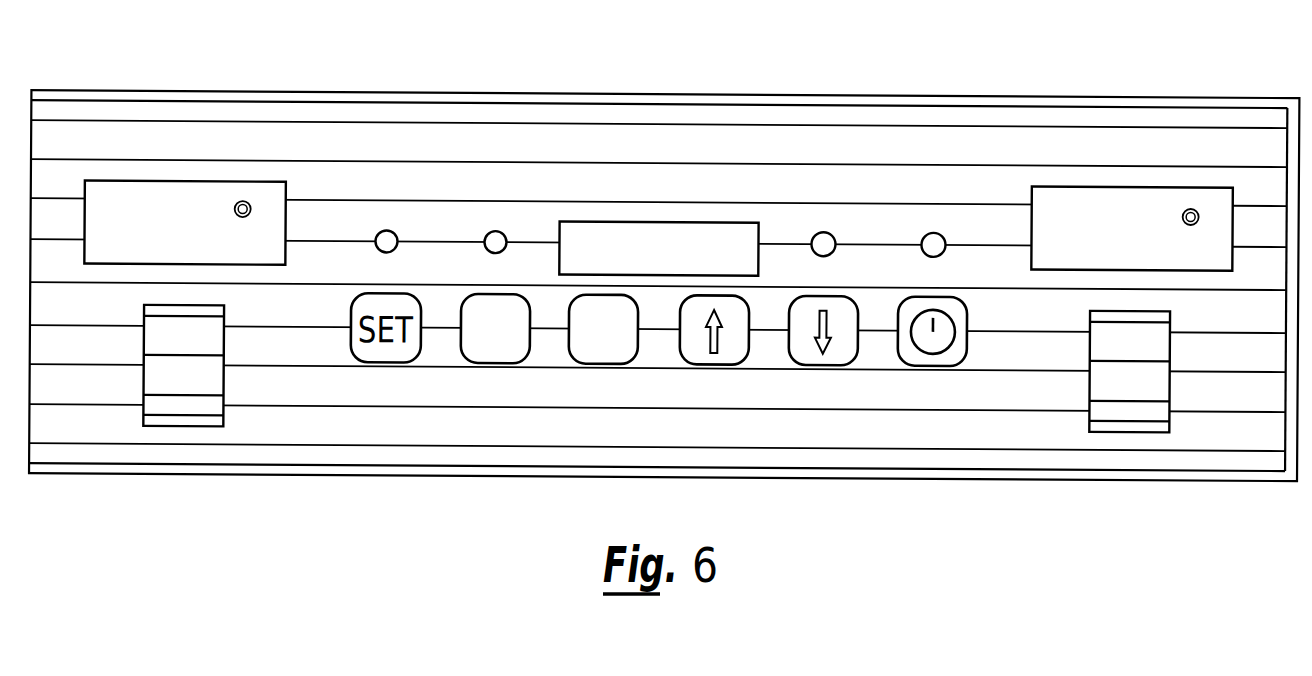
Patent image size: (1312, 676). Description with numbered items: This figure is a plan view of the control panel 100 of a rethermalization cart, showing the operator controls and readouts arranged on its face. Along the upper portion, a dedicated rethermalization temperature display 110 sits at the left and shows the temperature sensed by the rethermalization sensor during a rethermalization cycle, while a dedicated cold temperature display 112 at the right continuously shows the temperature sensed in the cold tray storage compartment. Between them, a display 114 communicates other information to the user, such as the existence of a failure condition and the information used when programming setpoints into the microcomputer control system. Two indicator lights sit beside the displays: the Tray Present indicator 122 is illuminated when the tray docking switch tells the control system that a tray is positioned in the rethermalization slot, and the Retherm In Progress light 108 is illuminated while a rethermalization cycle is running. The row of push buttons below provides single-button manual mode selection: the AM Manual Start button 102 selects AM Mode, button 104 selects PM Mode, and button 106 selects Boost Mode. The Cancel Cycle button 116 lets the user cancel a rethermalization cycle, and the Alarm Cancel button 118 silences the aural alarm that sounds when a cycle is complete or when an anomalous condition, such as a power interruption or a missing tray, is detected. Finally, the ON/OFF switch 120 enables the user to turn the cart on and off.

The control panel 100 is at (568, 93).
The AM Manual Start button 102 is at (492, 362).
The PM Mode button 104 is at (600, 362).
The Boost Mode button 106 is at (710, 365).
The Retherm In Progress light 108 is at (503, 232).
The rethermalization temperature display 110 is at (169, 181).
The cold temperature display 112 is at (1088, 188).
The display 114 is at (623, 222).
The Cancel Cycle button 116 is at (820, 365).
The Alarm Cancel button 118 is at (927, 365).
The ON/OFF switch 120 is at (1090, 352).
The Tray Present indicator 122 is at (395, 232).